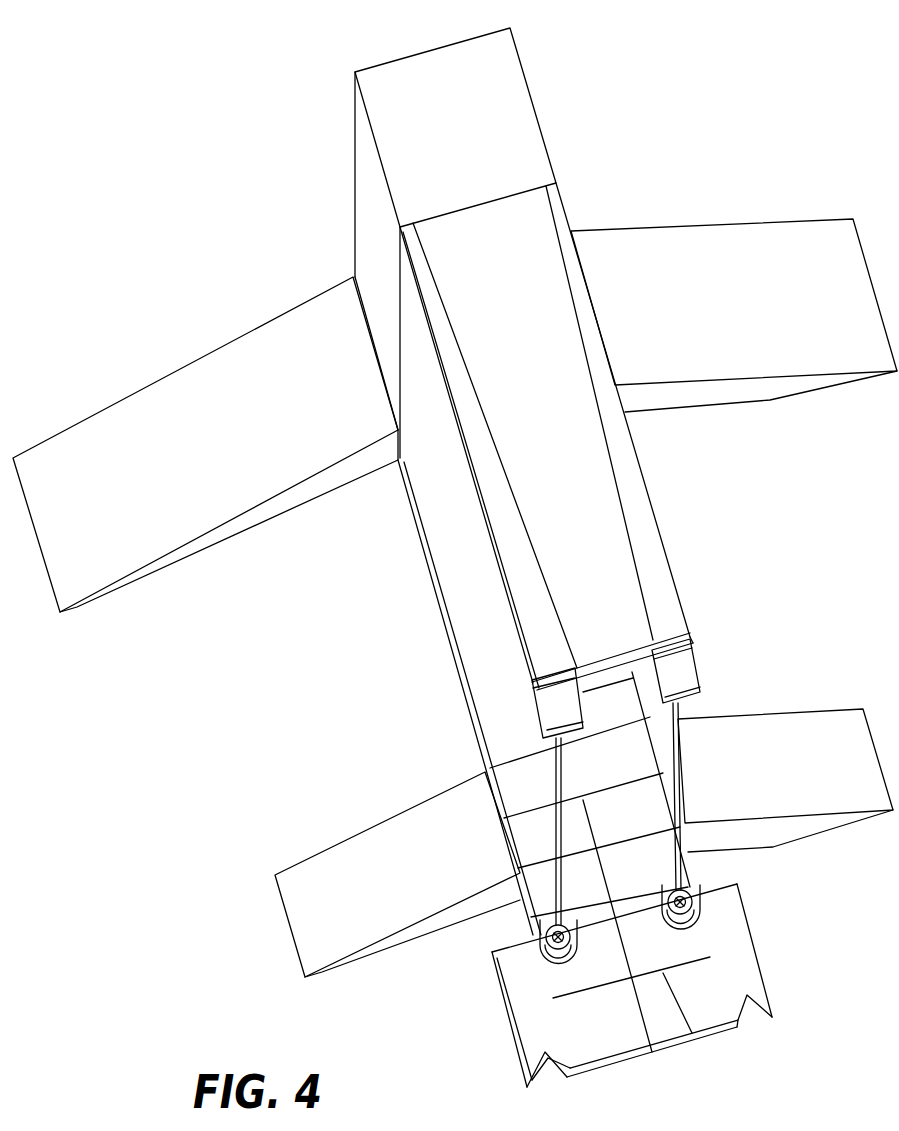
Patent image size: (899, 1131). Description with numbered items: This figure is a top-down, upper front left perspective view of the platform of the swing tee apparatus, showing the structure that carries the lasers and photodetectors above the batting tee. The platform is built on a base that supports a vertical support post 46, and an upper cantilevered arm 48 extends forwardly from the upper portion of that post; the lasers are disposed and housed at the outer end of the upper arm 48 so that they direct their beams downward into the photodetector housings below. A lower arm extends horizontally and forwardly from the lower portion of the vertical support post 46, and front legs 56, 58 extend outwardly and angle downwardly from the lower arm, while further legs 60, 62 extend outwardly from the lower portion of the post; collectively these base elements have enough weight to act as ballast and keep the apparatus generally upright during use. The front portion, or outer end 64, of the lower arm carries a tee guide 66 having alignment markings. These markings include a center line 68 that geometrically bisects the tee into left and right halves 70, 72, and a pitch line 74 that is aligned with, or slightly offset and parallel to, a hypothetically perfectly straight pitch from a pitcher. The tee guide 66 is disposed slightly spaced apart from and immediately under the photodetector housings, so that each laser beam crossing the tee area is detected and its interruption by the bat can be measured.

The vertical support post 46 is at (382, 78).
The upper cantilevered arm 48 is at (598, 495).
The front leg 56 is at (315, 870).
The front leg 58 is at (797, 723).
The upper left fin 60 is at (223, 362).
The upper right fin 62 is at (720, 240).
The outer end of lower arm 64 is at (520, 915).
The tee guide 66 is at (620, 994).
The center line 68 is at (643, 1057).
The left half 70 is at (528, 1032).
The right half 72 is at (747, 957).
The pitch line 74 is at (692, 1035).